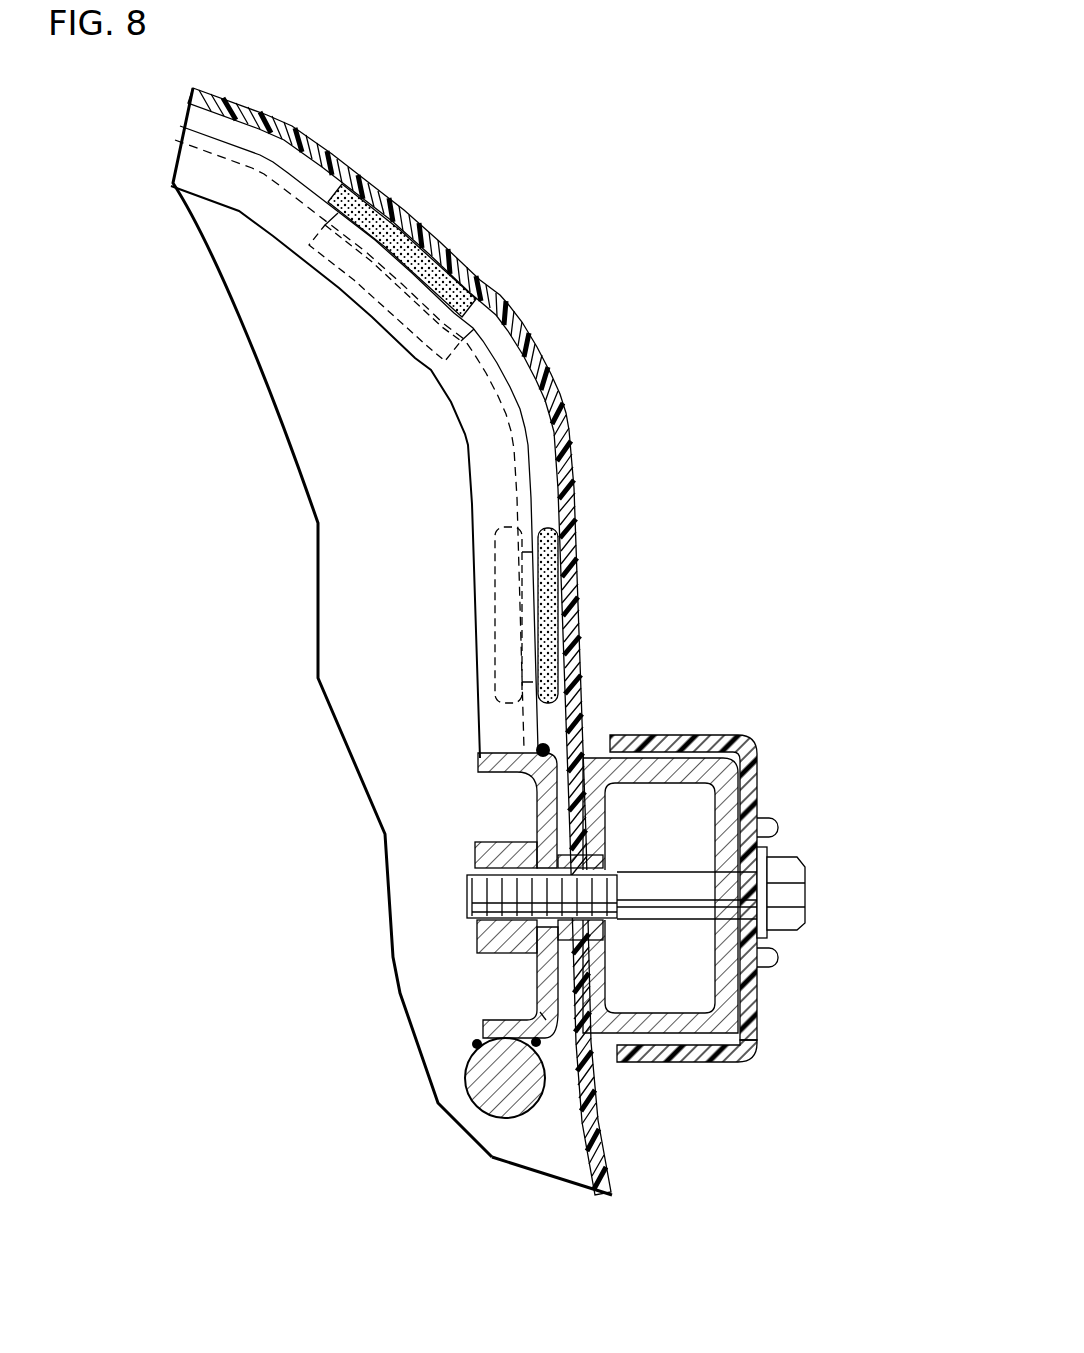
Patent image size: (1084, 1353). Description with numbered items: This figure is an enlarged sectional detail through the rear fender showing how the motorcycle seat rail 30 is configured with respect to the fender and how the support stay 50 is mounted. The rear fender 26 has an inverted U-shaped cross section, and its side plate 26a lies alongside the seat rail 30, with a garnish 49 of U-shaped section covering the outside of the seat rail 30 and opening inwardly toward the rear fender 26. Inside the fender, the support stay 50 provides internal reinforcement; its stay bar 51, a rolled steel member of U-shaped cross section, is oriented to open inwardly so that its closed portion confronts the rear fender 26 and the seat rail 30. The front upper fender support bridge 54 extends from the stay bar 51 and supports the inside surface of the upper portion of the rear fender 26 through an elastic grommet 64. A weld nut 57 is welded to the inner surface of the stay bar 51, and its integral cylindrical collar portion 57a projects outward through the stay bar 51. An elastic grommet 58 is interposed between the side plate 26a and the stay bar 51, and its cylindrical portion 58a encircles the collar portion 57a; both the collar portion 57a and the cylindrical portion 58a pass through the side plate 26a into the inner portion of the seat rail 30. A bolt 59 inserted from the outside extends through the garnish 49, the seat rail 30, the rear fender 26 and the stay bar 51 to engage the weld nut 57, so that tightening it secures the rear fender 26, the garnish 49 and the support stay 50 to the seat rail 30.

The rear fender 26 is at (302, 132).
The side plate 26a is at (597, 1090).
The seat rail 30 is at (642, 757).
The garnish 49 is at (738, 743).
The support stay 50 is at (516, 1128).
The stay bar 51 is at (540, 1012).
The front upper fender support bridge 54 is at (457, 385).
The weld nut 57 is at (475, 862).
The cylindrical collar portion 57a is at (607, 867).
The grommet 58 is at (538, 832).
The cylindrical portion 58a is at (760, 968).
The bolt 59 is at (795, 900).
The grommet 64 is at (458, 267).